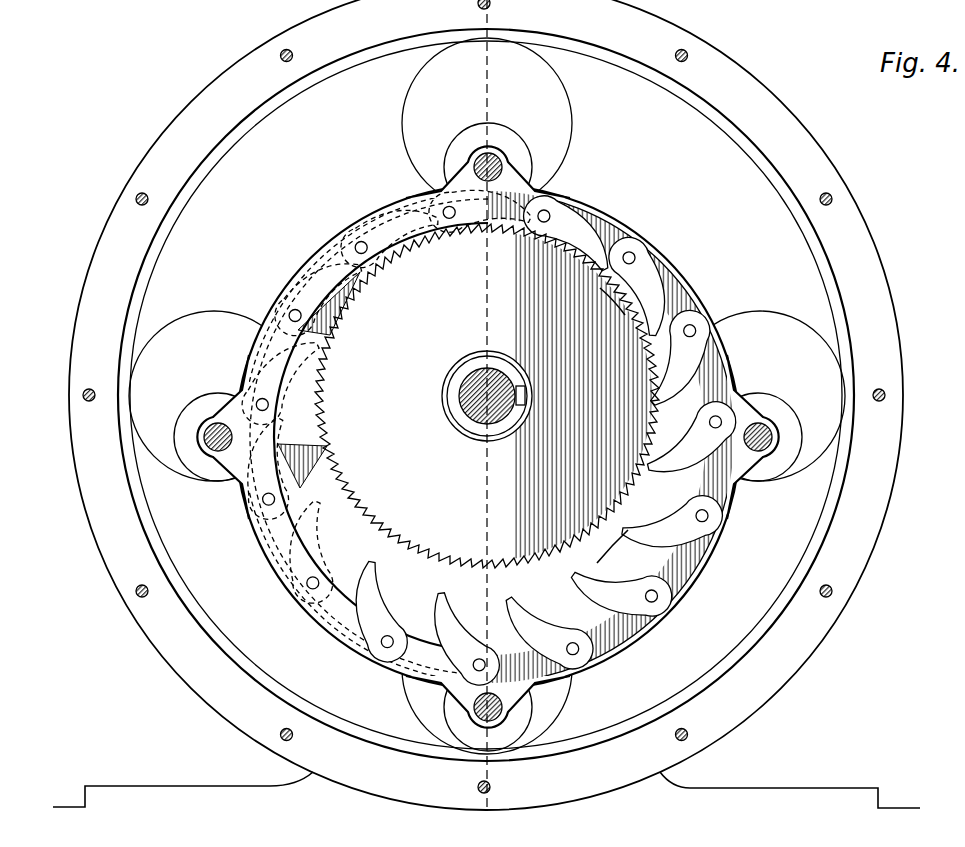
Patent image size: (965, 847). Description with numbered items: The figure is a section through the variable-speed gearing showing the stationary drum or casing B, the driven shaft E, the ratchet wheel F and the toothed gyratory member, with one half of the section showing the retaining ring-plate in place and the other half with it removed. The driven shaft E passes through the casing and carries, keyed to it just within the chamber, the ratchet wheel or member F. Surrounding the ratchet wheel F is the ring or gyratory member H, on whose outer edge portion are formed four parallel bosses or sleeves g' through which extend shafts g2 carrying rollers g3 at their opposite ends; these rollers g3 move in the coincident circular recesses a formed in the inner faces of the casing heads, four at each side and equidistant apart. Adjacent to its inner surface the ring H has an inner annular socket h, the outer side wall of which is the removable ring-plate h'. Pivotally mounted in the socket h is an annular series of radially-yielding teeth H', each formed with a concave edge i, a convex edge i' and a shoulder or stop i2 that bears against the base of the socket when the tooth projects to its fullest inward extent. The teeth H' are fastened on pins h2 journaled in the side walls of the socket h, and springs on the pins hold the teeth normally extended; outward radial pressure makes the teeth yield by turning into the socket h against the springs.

The casing B is at (250, 78).
The ring or gyratory member H is at (490, 437).
The radially-yielding teeth H' is at (466, 437).
The ratchet wheel or member F is at (487, 396).
The driven shaft E is at (458, 390).
The circular recesses a is at (227, 327).
The bosses or sleeves g' is at (515, 415).
The shafts g2 is at (205, 430).
The rollers g3 is at (190, 402).
The inner annular socket h is at (619, 437).
The removable ring-plate h' is at (382, 394).
The pins h2 is at (310, 598).
The concave edges i is at (525, 438).
The convex edges i' is at (453, 449).
The shoulders or stops i2 is at (713, 510).